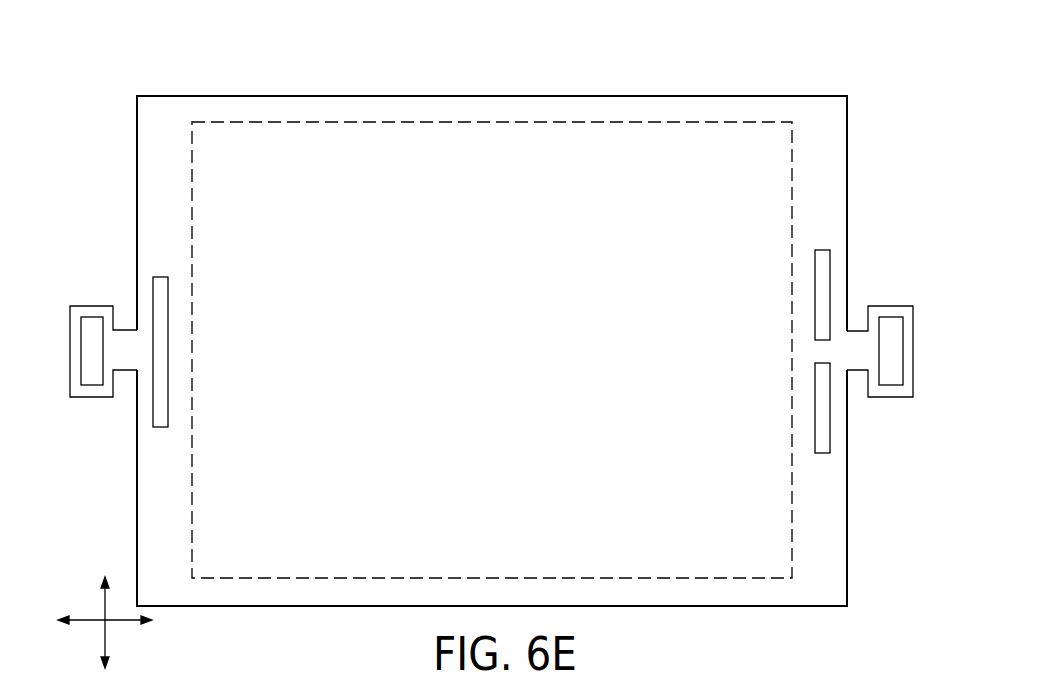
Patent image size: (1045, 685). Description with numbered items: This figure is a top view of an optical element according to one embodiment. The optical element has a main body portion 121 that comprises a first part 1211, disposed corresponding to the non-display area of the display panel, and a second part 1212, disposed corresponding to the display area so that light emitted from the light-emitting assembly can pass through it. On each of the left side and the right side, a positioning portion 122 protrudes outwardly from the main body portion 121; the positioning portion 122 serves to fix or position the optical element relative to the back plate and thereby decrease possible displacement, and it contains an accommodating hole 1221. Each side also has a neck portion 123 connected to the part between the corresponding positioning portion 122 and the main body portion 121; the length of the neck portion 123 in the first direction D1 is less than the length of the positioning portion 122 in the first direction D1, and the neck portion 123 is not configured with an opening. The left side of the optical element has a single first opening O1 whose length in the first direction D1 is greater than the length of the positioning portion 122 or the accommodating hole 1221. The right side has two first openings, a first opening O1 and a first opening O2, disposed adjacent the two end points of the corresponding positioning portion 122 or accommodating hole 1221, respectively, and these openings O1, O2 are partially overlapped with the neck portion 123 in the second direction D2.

The main body portion 121 is at (492, 307).
The first part 1211 is at (588, 113).
The second part 1212 is at (653, 150).
The positioning portion 122 is at (93, 390).
The accommodating hole 1221 is at (90, 332).
The neck portion 123 is at (127, 352).
The first opening O1 is at (158, 346).
The first opening O2 is at (820, 417).
The first direction D1 is at (108, 608).
The second direction D2 is at (121, 621).